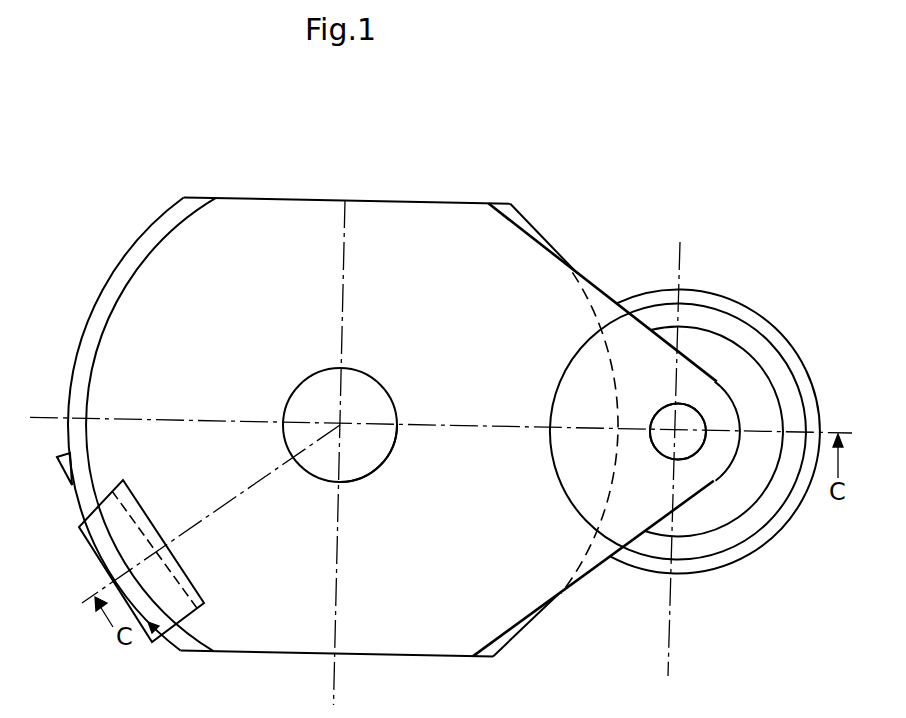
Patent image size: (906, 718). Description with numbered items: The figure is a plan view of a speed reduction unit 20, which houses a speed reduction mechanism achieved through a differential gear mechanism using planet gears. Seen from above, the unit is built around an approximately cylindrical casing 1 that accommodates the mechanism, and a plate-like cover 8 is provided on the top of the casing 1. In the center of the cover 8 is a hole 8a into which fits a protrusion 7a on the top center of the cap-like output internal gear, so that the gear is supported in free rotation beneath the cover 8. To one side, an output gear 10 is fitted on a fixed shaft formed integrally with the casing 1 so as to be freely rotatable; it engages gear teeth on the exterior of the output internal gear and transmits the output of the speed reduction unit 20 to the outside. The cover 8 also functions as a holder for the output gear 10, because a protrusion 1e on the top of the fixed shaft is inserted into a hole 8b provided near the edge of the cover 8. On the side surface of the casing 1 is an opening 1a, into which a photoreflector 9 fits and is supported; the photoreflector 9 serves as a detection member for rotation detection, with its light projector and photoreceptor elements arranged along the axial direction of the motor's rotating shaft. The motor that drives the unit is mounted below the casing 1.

The casing 1 is at (138, 240).
The opening 1a is at (107, 502).
The protrusion 1e is at (665, 412).
The protrusion 7a is at (372, 458).
The cover 8 is at (436, 228).
The hole 8a is at (378, 376).
The hole 8b is at (661, 458).
The photoreflector 9 is at (82, 528).
The output gear 10 is at (656, 571).
The speed reduction unit 20 is at (608, 246).